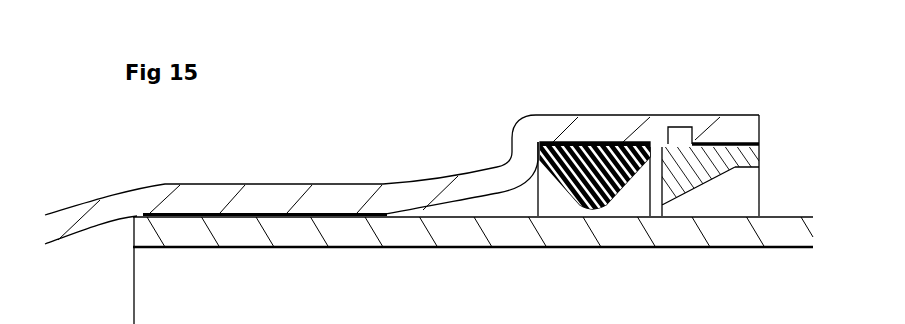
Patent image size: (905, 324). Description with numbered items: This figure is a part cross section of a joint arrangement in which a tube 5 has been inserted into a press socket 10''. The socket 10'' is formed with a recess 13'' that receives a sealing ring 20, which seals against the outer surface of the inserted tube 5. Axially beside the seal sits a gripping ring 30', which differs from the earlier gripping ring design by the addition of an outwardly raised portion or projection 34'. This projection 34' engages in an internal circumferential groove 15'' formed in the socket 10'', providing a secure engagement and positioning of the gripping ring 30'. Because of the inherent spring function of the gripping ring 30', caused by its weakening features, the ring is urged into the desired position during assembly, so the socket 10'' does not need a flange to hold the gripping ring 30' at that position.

The tube 5 is at (655, 230).
The socket 10'' is at (271, 178).
The recess 13'' is at (612, 116).
The sealing ring 20 is at (577, 143).
The gripping ring 30' is at (731, 128).
The projection 34' is at (700, 86).
The internal circumferential groove 15'' is at (713, 72).